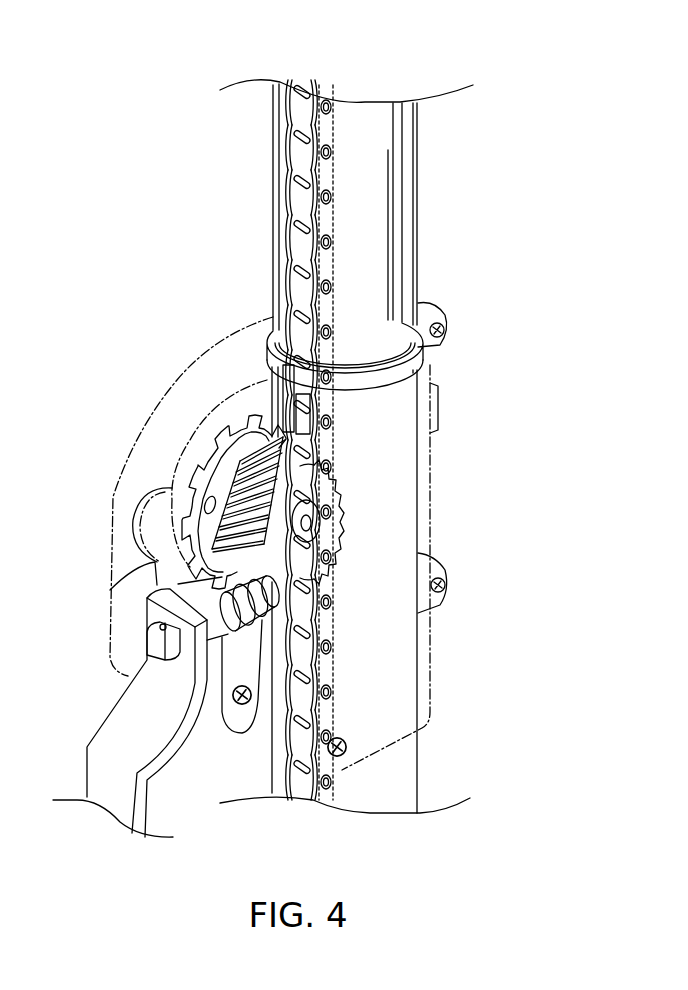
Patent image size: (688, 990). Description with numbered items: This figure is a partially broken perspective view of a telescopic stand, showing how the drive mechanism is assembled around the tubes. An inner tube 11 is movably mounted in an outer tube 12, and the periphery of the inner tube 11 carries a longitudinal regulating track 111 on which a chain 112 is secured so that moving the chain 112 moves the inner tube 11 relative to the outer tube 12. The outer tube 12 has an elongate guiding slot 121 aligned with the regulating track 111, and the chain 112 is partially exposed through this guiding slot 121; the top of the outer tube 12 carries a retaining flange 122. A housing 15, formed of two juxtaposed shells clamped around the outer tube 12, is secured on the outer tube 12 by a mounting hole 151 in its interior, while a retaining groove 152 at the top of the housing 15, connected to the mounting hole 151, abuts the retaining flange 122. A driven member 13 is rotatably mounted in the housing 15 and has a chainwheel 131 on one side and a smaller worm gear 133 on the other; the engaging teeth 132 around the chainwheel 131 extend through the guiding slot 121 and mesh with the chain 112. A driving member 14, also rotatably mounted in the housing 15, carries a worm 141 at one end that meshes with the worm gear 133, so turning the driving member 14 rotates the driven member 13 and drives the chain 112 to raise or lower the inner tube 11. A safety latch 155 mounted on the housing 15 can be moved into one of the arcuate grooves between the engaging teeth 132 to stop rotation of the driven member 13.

The inner tube 11 is at (353, 128).
The regulating track 111 is at (292, 115).
The chain 112 is at (343, 362).
The outer tube 12 is at (392, 667).
The guiding slot 121 is at (283, 403).
The retaining flange 122 is at (390, 385).
The driven member 13 is at (218, 447).
The chainwheel 131 is at (203, 490).
The engaging teeth 132 is at (337, 450).
The worm gear 133 is at (213, 503).
The driving member 14 is at (260, 722).
The worm 141 is at (287, 598).
The housing 15 is at (207, 353).
The mounting hole 151 is at (320, 420).
The retaining groove 152 is at (390, 385).
The safety latch 155 is at (103, 570).